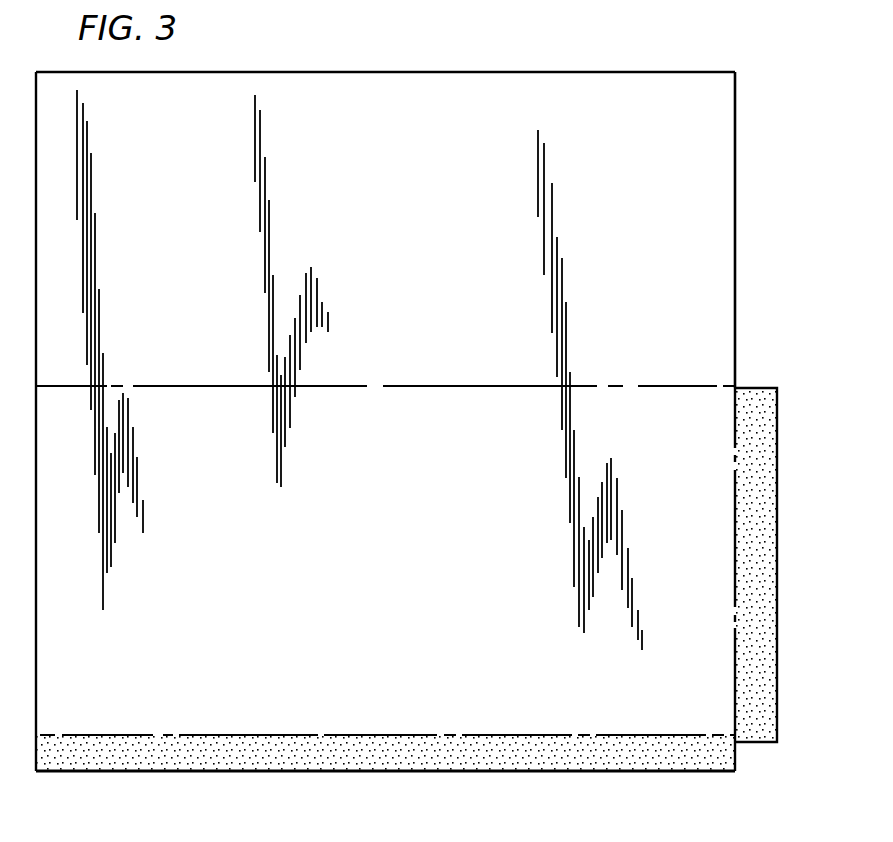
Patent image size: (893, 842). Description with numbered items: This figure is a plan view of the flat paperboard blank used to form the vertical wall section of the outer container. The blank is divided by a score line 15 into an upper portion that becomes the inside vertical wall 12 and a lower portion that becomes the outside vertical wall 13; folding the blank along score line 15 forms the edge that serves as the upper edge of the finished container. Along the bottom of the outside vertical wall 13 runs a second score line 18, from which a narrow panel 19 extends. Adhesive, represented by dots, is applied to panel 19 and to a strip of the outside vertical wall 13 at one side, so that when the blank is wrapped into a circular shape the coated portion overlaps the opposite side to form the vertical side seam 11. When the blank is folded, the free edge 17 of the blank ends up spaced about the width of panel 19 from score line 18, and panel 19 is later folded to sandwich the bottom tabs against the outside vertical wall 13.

The vertical side seam 11 is at (767, 542).
The inside vertical wall 12 is at (381, 218).
The outside vertical wall 13 is at (400, 573).
The score line 15 is at (462, 385).
The edge 17 is at (462, 72).
The score line 18 is at (347, 735).
The panel 19 is at (395, 758).